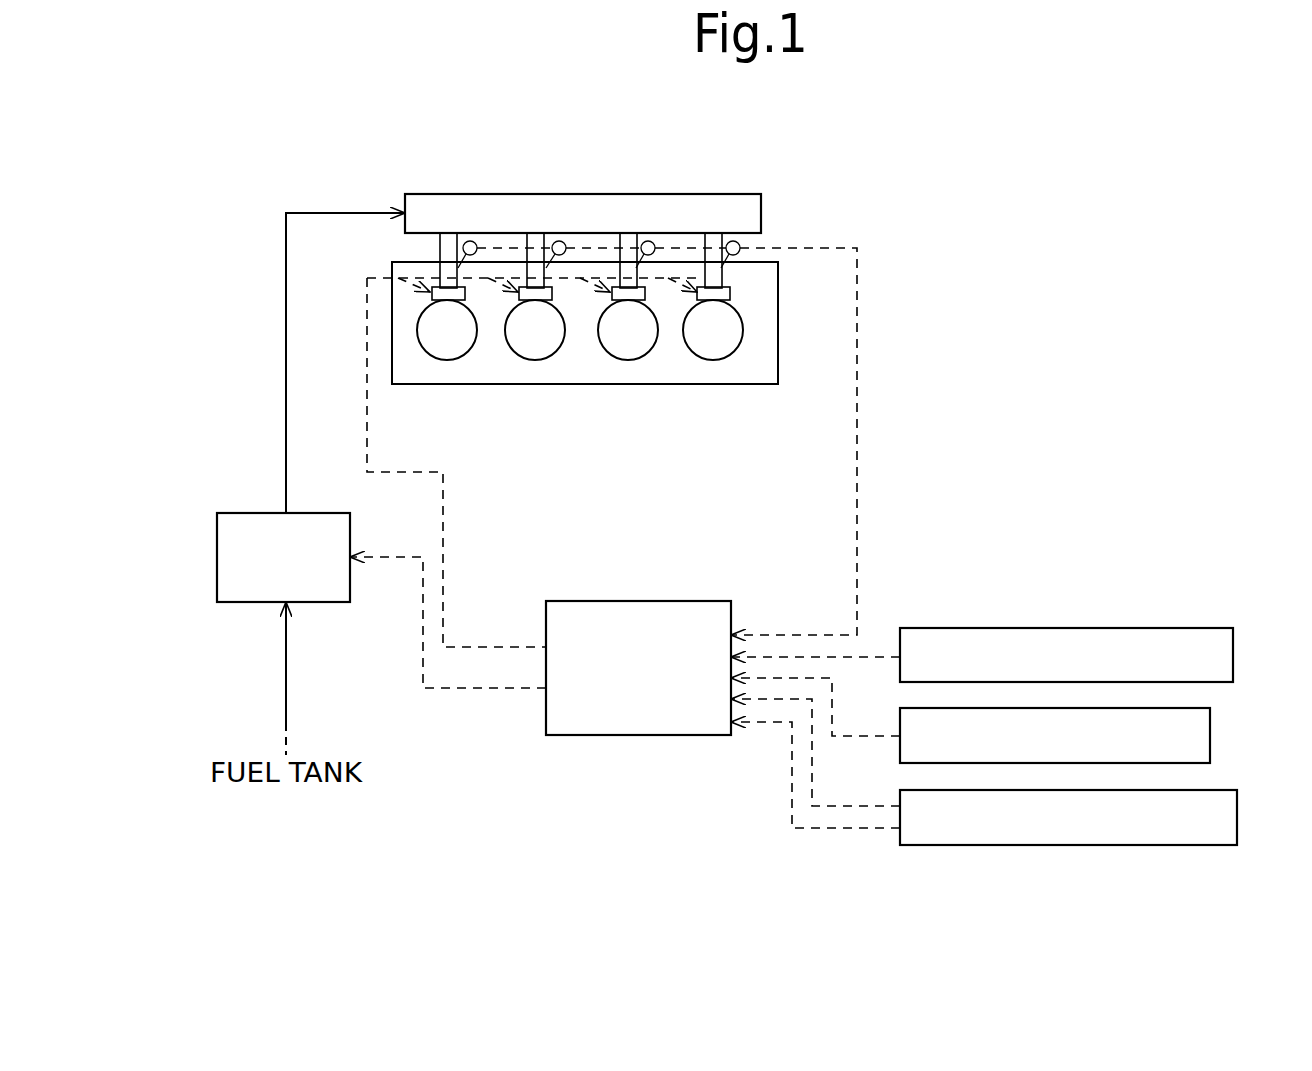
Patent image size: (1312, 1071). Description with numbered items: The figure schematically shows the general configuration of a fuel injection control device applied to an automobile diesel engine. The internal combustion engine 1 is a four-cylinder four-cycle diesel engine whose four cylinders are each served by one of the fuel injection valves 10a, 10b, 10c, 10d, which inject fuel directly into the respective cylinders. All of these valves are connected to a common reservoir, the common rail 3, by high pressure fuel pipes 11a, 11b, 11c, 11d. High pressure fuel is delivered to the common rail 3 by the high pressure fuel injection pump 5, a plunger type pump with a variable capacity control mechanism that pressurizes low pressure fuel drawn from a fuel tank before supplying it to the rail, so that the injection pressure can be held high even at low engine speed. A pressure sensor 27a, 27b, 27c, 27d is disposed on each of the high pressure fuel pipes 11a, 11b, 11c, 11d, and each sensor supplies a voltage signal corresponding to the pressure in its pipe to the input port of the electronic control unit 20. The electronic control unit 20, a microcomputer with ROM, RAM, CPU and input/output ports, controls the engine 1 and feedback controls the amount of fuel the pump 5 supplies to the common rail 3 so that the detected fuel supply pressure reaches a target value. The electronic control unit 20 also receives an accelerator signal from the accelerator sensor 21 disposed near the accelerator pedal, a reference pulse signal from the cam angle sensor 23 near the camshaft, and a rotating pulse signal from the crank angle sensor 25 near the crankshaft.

The internal combustion engine 1 is at (820, 322).
The common rail 3 is at (424, 194).
The high pressure fuel injection pump 5 is at (252, 513).
The fuel injection valve 10a is at (468, 302).
The fuel injection valve 10b is at (556, 302).
The fuel injection valve 10c is at (648, 302).
The fuel injection valve 10d is at (735, 302).
The high pressure fuel pipe 11a is at (440, 250).
The high pressure fuel pipe 11b is at (525, 233).
The high pressure fuel pipe 11c is at (626, 233).
The high pressure fuel pipe 11d is at (700, 240).
The electronic control unit 20 is at (638, 737).
The accelerator sensor 21 is at (1235, 668).
The cam angle sensor 23 is at (1212, 745).
The crank angle sensor 25 is at (1240, 822).
The pressure sensor 27a is at (470, 241).
The pressure sensor 27b is at (559, 241).
The pressure sensor 27c is at (648, 241).
The pressure sensor 27d is at (736, 241).